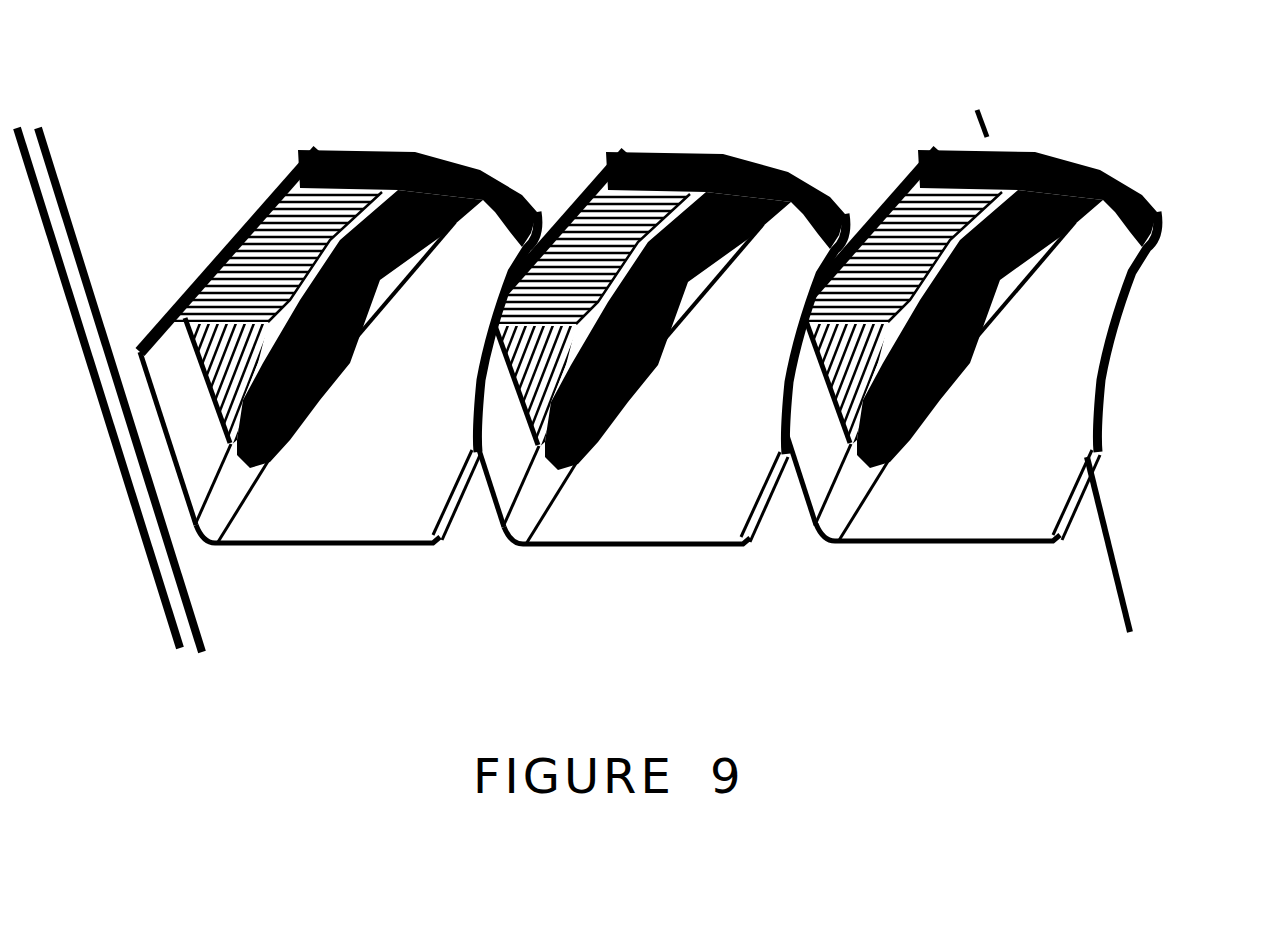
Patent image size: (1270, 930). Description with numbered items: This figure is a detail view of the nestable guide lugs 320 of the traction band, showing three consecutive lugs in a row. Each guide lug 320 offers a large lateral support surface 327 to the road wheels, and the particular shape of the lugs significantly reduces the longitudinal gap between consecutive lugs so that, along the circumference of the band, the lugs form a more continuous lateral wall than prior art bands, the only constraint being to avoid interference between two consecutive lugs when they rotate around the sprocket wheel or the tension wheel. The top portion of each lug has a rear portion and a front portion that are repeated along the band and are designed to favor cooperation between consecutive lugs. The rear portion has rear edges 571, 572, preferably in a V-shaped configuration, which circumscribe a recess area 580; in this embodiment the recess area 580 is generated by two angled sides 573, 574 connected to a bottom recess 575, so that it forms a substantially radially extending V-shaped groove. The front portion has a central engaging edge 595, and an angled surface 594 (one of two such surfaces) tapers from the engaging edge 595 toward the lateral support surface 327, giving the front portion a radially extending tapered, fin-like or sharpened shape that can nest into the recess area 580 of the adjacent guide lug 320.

The guide lug 320 is at (410, 564).
The lateral support surface 327 is at (1124, 376).
The rear edge 571 is at (265, 192).
The rear edge 572 is at (347, 350).
The angled side 573 is at (243, 286).
The angled side 574 is at (275, 446).
The bottom recess 575 is at (418, 157).
The recess area 580 is at (900, 178).
The angled surface 594 is at (470, 315).
The central engaging edge 595 is at (523, 193).